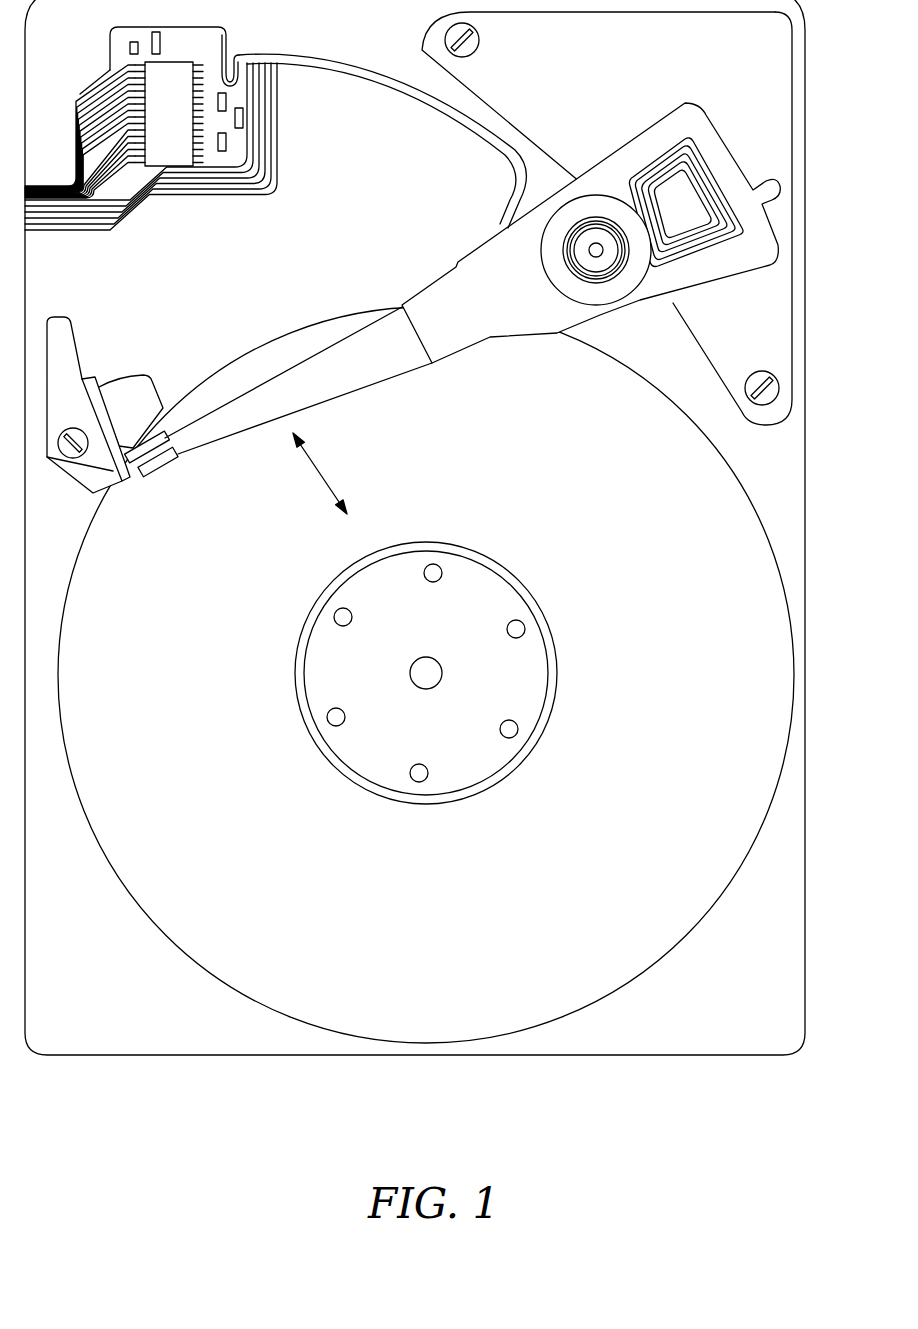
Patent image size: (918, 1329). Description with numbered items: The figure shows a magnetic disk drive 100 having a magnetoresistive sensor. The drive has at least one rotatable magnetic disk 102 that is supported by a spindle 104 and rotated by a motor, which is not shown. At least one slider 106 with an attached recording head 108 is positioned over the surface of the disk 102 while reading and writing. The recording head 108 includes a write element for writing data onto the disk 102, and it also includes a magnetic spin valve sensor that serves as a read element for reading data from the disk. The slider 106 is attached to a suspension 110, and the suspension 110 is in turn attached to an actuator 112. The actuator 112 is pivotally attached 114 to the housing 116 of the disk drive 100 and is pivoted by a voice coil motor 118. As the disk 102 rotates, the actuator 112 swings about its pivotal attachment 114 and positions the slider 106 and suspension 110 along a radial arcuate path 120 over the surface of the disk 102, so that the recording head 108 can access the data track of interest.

The magnetic disk drive 100 is at (446, 603).
The rotatable magnetic disk 102 is at (738, 489).
The spindle 104 is at (372, 752).
The slider 106 is at (170, 458).
The recording head 108 is at (135, 472).
The suspension 110 is at (352, 381).
The actuator 112 is at (423, 300).
The pivotal attachment 114 is at (598, 258).
The housing 116 is at (798, 503).
The voice coil motor 118 is at (705, 129).
The radial arcuate path 120 is at (300, 476).